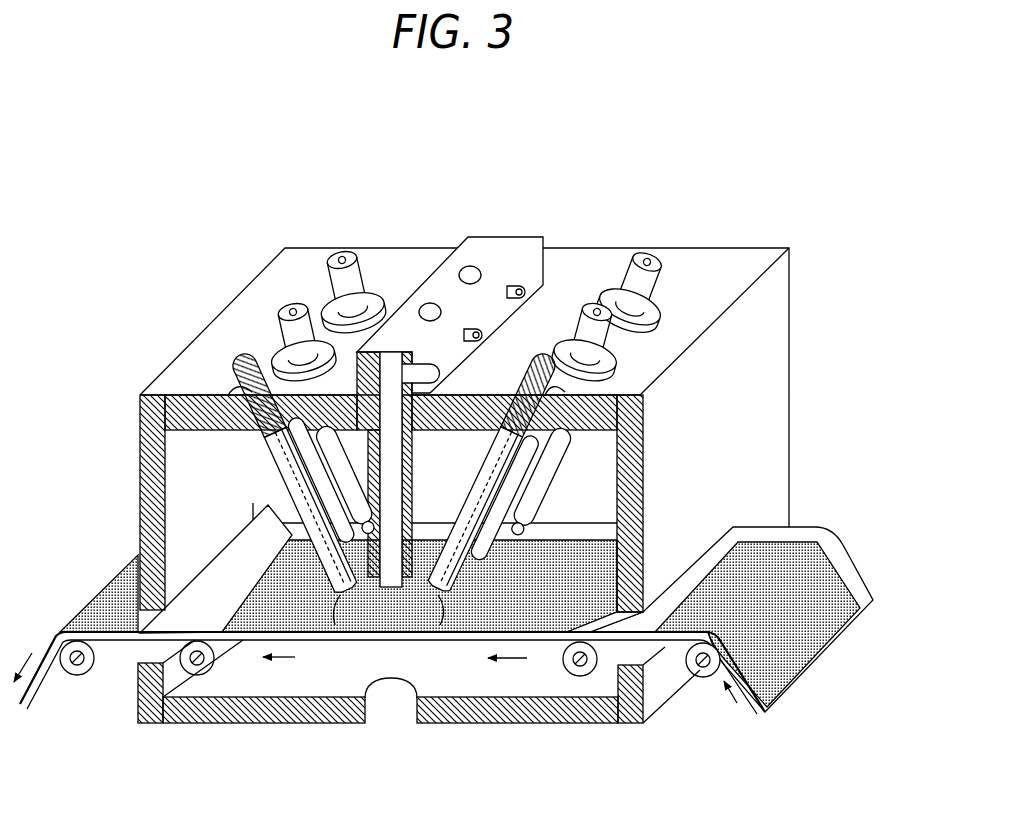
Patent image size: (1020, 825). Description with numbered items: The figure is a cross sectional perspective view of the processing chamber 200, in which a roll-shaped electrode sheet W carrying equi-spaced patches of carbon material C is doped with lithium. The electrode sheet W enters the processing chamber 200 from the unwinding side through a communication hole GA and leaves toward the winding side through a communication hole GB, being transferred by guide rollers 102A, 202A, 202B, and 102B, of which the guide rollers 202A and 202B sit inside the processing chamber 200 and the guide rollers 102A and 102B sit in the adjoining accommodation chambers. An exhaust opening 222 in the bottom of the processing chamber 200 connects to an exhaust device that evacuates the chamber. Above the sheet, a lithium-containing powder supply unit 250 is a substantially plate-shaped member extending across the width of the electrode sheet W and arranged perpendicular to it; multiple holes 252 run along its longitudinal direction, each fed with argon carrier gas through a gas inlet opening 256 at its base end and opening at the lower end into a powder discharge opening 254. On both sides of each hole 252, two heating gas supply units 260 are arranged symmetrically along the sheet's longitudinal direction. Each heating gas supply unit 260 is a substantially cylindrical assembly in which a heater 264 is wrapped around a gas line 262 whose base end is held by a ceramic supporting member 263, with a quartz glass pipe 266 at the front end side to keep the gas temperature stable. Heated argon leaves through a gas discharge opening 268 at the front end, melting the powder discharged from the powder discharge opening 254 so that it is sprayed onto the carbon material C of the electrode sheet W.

The processing chamber 200 is at (188, 101).
The lithium-containing powder supply unit 250 is at (490, 234).
The holes 252 is at (432, 302).
The powder discharge opening 254 is at (388, 590).
The gas inlet opening 256 is at (488, 330).
The heating gas supply unit 260 is at (327, 260).
The gas line 262 is at (330, 300).
The supporting member 263 is at (283, 390).
The heater 264 is at (268, 452).
The glass pipe 266 is at (278, 487).
The gas discharge opening 268 is at (350, 595).
The exhaust opening 222 is at (395, 702).
The guide roller 202A is at (580, 677).
The guide roller 202B is at (197, 676).
The guide roller 102A is at (700, 678).
The guide roller 102B is at (77, 676).
The communication hole GA is at (650, 655).
The communication hole GB is at (150, 652).
The carbon material C is at (115, 590).
The electrode sheet W is at (808, 530).